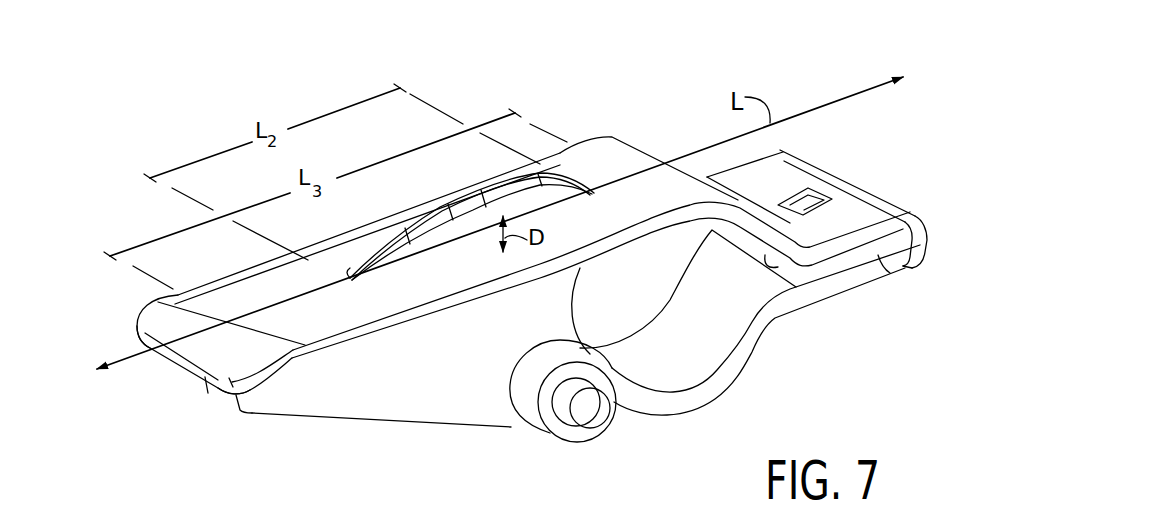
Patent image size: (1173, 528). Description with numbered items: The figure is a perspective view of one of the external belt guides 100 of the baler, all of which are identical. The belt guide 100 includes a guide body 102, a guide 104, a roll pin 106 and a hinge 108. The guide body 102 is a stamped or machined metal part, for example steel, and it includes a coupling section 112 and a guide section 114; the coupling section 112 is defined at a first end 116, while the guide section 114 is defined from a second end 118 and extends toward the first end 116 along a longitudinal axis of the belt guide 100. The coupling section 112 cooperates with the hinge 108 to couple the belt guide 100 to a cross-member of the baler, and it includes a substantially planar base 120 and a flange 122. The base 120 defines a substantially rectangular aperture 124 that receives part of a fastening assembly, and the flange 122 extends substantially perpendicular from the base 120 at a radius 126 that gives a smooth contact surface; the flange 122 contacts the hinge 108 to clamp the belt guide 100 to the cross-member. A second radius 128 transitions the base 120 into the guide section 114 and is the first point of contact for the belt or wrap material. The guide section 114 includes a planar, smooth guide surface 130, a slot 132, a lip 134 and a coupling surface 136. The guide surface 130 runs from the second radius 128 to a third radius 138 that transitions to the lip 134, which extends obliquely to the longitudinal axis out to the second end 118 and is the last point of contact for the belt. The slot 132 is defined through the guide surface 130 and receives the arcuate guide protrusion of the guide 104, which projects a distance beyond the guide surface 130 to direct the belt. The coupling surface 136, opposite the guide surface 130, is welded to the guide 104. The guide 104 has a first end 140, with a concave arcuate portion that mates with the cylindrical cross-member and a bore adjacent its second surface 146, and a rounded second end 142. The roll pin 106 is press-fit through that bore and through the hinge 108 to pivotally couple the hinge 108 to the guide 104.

The belt guide 100 is at (693, 50).
The guide body 102 is at (788, 90).
The guide 104 is at (393, 428).
The roll pin 106 is at (583, 438).
The hinge 108 is at (843, 302).
The coupling section 112 is at (848, 127).
The guide section 114 is at (378, 193).
The first end 116 is at (937, 250).
The second end 118 is at (192, 383).
The base 120 is at (737, 160).
The flange 122 is at (926, 232).
The aperture 124 is at (807, 203).
The radius 126 is at (857, 190).
The second radius 128 is at (610, 137).
The guide surface 130 is at (430, 287).
The slot 132 is at (348, 270).
The lip 134 is at (225, 363).
The coupling surface 136 is at (323, 358).
The third radius 138 is at (170, 296).
The first end 140 is at (583, 300).
The second end 142 is at (241, 422).
The second surface 146 is at (427, 422).